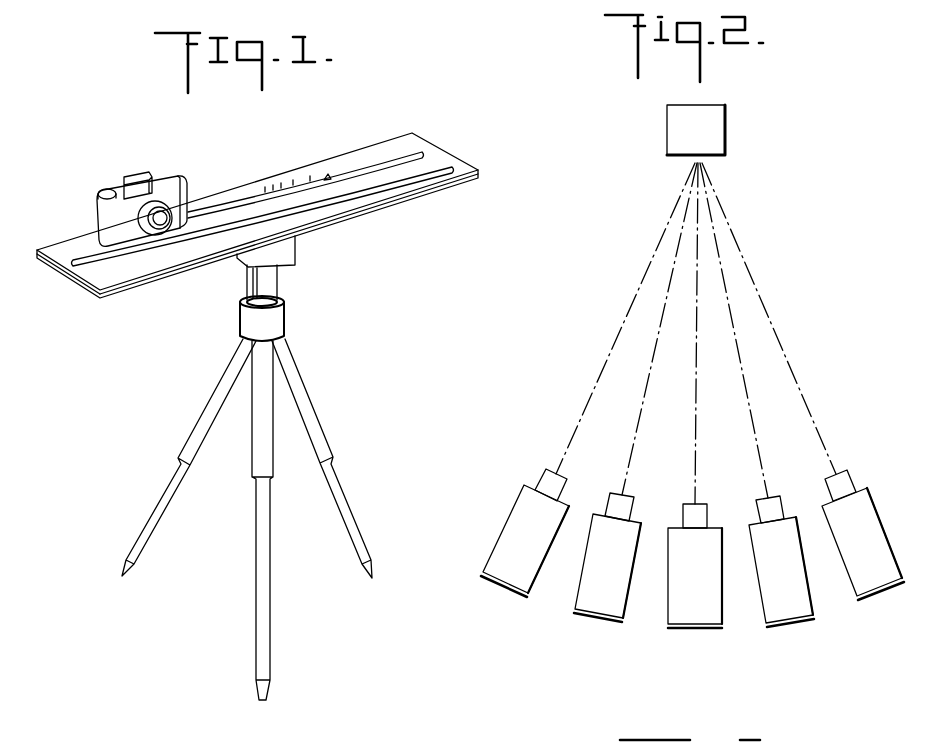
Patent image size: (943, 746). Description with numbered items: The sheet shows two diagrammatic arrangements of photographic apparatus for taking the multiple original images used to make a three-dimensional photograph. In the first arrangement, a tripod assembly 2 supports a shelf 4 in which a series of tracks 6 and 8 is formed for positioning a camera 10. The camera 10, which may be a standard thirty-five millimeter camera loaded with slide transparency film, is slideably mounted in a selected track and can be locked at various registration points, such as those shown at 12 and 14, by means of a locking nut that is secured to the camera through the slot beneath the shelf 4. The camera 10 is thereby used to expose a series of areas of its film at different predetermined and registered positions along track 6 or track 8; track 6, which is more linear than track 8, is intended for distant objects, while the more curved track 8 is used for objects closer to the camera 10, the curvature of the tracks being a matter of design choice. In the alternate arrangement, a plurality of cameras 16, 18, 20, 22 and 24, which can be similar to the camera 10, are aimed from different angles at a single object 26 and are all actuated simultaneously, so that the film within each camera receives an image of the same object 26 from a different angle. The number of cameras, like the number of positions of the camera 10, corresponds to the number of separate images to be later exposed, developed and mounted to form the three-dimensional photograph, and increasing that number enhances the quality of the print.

In FIG. 1, the tripod assembly 2 is at (288, 325).
In FIG. 1, the shelf 4 is at (70, 278).
In FIG. 1, the track 6 is at (383, 157).
In FIG. 1, the track 8 is at (438, 155).
In FIG. 1, the camera 10 is at (143, 173).
In FIG. 1, the registration point 12 is at (272, 187).
In FIG. 1, the registration point 14 is at (328, 178).
In FIG. 2, the camera 16 is at (502, 528).
In FIG. 2, the camera 18 is at (580, 600).
In FIG. 2, the camera 20 is at (667, 618).
In FIG. 2, the camera 22 is at (775, 608).
In FIG. 2, the camera 24 is at (867, 575).
In FIG. 2, the object 26 is at (725, 155).